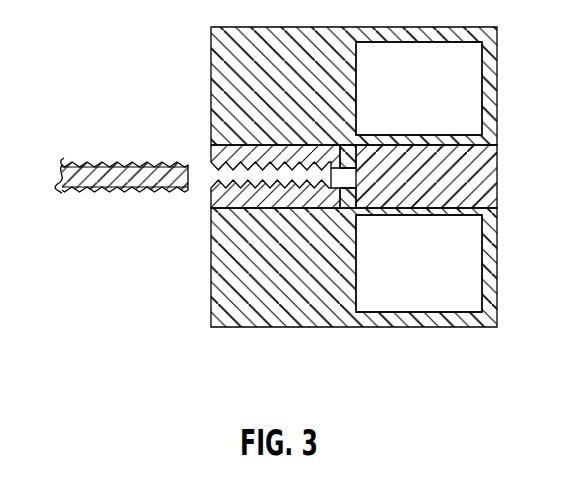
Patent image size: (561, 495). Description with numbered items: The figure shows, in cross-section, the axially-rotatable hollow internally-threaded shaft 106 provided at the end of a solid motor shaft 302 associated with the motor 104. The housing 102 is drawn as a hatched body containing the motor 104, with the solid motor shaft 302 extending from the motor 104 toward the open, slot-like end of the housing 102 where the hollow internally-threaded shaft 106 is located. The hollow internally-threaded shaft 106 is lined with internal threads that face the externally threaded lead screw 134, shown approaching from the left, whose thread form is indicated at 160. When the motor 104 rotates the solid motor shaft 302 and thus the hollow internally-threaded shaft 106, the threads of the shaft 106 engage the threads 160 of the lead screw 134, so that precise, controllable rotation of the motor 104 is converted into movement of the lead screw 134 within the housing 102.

The housing 102 is at (367, 328).
The motor 104 is at (435, 288).
The axially-rotatable hollow internally-threaded shaft 106 is at (227, 162).
The lead screw 134 is at (62, 193).
The threads 160 is at (121, 161).
The solid motor shaft 302 is at (345, 180).